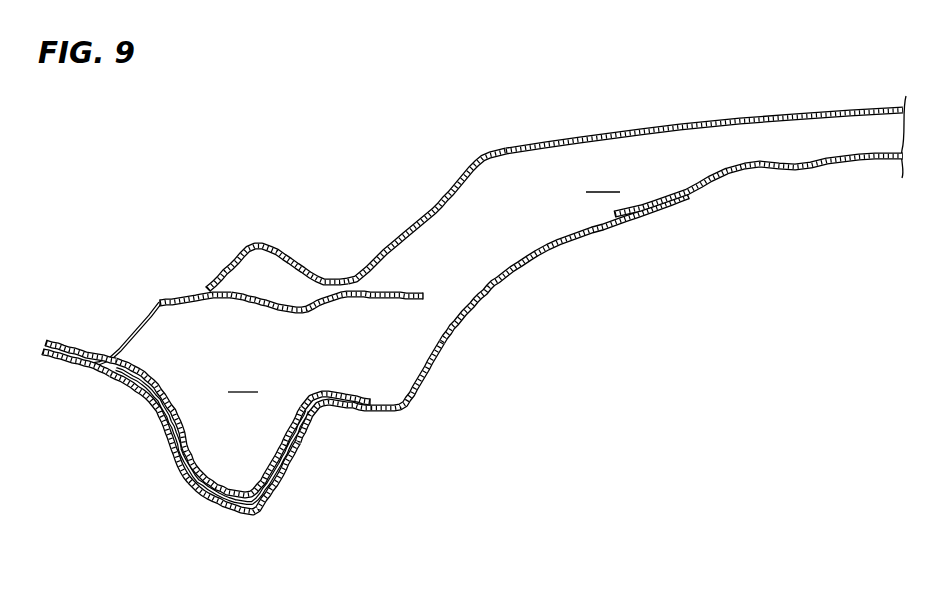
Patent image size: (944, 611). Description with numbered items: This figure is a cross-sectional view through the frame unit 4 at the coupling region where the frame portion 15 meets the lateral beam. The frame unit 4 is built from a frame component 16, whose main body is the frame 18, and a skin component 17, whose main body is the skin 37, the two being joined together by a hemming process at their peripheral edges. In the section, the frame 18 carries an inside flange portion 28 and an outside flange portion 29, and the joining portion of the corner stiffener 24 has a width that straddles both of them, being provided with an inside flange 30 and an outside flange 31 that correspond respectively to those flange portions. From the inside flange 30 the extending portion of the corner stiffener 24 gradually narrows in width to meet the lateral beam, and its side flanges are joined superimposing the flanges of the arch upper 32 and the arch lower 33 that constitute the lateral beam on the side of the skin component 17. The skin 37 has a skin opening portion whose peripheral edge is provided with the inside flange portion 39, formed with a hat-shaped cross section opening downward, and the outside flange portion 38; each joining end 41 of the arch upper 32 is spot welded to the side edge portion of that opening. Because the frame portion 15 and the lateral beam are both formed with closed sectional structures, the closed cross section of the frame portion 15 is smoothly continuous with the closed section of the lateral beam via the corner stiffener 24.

The frame unit 4 is at (403, 146).
The frame portion 15 is at (147, 418).
The frame component 16 is at (485, 376).
The skin component 17 is at (503, 136).
The frame 18 is at (262, 514).
The corner stiffener 24 is at (175, 462).
The inside flange portion 28 is at (344, 406).
The outside flange portion 29 is at (52, 363).
The inside flange 30 is at (352, 398).
The outside flange 31 is at (47, 343).
The arch upper 32 is at (716, 122).
The arch lower 33 is at (753, 168).
The skin 37 is at (153, 300).
The outside flange portion 38 is at (78, 347).
The inside flange portion 39 is at (402, 292).
The joining end 41 is at (261, 243).